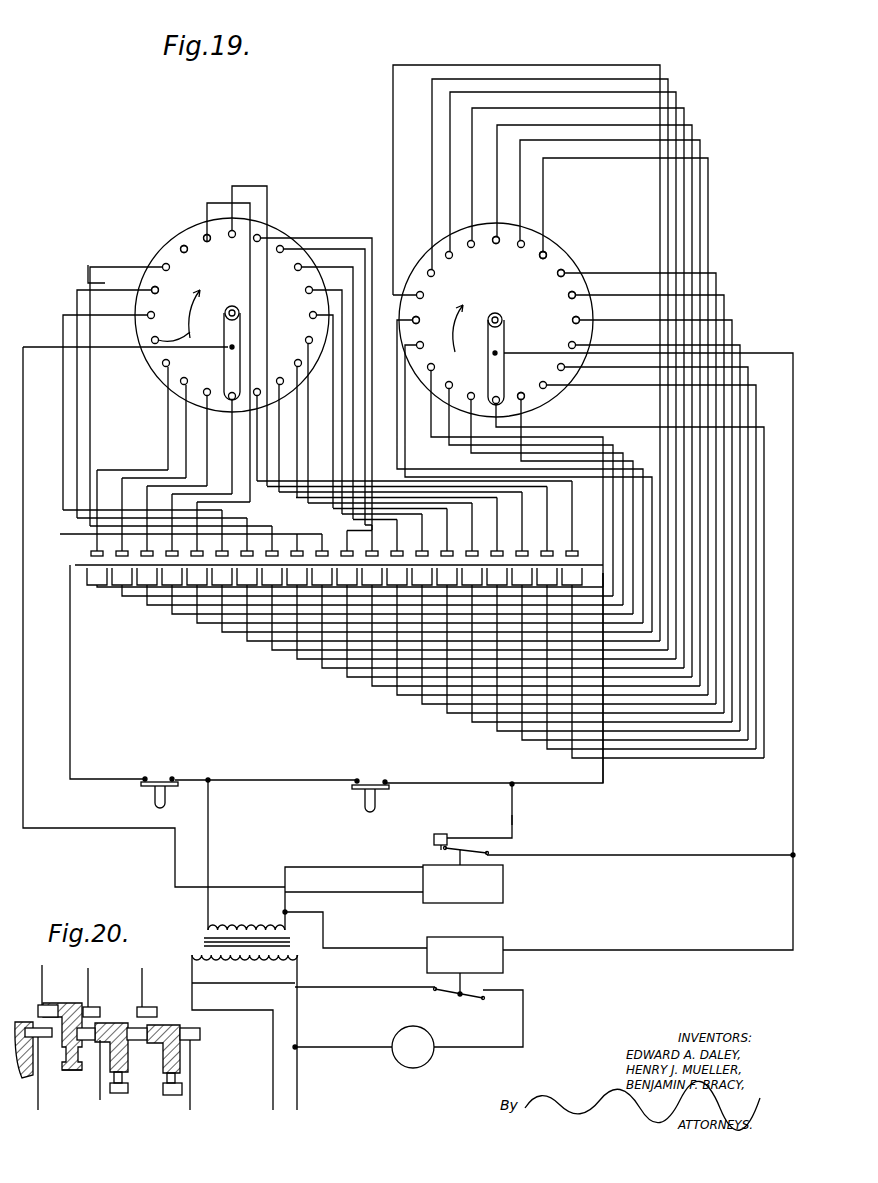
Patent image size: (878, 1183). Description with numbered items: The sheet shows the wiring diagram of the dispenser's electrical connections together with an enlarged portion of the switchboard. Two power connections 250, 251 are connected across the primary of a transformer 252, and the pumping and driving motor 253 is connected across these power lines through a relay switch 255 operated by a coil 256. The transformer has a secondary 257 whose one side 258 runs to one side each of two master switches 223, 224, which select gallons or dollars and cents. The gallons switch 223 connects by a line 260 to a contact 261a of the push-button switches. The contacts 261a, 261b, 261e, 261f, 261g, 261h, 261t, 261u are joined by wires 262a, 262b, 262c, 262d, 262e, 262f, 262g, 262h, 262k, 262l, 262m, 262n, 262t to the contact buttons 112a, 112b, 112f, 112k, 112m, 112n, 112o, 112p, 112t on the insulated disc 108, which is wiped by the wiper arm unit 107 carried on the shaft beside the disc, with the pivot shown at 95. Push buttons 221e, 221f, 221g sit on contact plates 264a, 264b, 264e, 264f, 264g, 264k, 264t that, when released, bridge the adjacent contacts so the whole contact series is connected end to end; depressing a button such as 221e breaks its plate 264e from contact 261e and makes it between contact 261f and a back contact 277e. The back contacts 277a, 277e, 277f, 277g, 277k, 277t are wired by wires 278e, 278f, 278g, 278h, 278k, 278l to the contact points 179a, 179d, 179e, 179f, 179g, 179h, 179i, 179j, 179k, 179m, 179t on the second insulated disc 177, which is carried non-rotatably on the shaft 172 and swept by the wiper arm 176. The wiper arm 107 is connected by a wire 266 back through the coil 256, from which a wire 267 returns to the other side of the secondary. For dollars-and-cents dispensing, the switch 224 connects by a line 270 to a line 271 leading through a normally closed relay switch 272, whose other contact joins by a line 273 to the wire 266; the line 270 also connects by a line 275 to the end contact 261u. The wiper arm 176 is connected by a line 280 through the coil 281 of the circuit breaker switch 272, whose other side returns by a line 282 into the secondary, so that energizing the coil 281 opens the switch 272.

In FIG. 19, the money dial shaft 95 is at (498, 312).
In FIG. 19, the wiper arm unit 107 is at (505, 330).
In FIG. 19, the insulated disc 108 is at (550, 245).
In FIG. 19, the zero contact button 112a is at (512, 382).
In FIG. 19, the contact button 112b is at (475, 392).
In FIG. 19, the contact button 112f is at (425, 318).
In FIG. 19, the contact button 112k is at (490, 250).
In FIG. 19, the contact button 112m is at (548, 258).
In FIG. 19, the contact button 112n is at (566, 273).
In FIG. 19, the contact button 112o is at (578, 293).
In FIG. 19, the contact button 112p is at (575, 320).
In FIG. 19, the contact button 112t is at (525, 398).
In FIG. 19, the shaft 172 is at (255, 300).
In FIG. 19, the wiper arm 176 is at (250, 325).
In FIG. 19, the insulated disc 177 is at (262, 235).
In FIG. 19, the zero contact button 179a is at (305, 343).
In FIG. 19, the contact point 179d is at (163, 363).
In FIG. 19, the contact point 179e is at (183, 317).
In FIG. 19, the contact point 179f is at (147, 317).
In FIG. 19, the contact point 179g is at (150, 272).
In FIG. 19, the contact point 179h is at (166, 263).
In FIG. 19, the contact point 179i is at (184, 245).
In FIG. 19, the contact point 179j is at (205, 230).
In FIG. 19, the contact point 179k is at (240, 230).
In FIG. 19, the contact point 179m is at (292, 248).
In FIG. 19, the contact point 179t is at (275, 380).
In FIG. 20, the push button 221e is at (66, 1070).
In FIG. 20, the push button 221f is at (128, 1090).
In FIG. 20, the push button 221g is at (182, 1093).
In FIG. 19, the master switch button 223 is at (166, 775).
In FIG. 19, the master switch button 224 is at (378, 778).
In FIG. 19, the power connection 250 is at (243, 1032).
In FIG. 19, the power connection 251 is at (297, 1085).
In FIG. 19, the transformer 252 is at (302, 930).
In FIG. 19, the pumping and driving motor 253 is at (408, 1068).
In FIG. 19, the relay switch 255 is at (485, 993).
In FIG. 19, the coil 256 is at (503, 968).
In FIG. 19, the secondary 257 is at (263, 928).
In FIG. 19, the side of the secondary 258 is at (210, 824).
In FIG. 19, the line 260 is at (70, 718).
In FIG. 19, the contact 261a is at (90, 565).
In FIG. 19, the contact 261b is at (88, 572).
In FIG. 20, the contact 261e is at (30, 1025).
In FIG. 20, the contact 261f is at (100, 1010).
In FIG. 20, the contact 261g is at (180, 1010).
In FIG. 20, the contact 261h is at (200, 1035).
In FIG. 19, the contact 261t is at (572, 560).
In FIG. 19, the contact 261u is at (585, 565).
In FIG. 19, the wire 262a is at (92, 588).
In FIG. 19, the wire 262b is at (118, 597).
In FIG. 19, the wire 262c is at (148, 610).
In FIG. 19, the wire 262d is at (172, 618).
In FIG. 19, the line 262e is at (197, 628).
In FIG. 20, the line 262e is at (38, 1085).
In FIG. 19, the wire 262f is at (222, 636).
In FIG. 19, the wire 262g is at (427, 62).
In FIG. 19, the wire 262h is at (462, 79).
In FIG. 20, the wire 262h is at (192, 1095).
In FIG. 19, the wire 262k is at (695, 135).
In FIG. 19, the wire 262l is at (710, 150).
In FIG. 19, the wire 262m is at (548, 188).
In FIG. 19, the wire 262n is at (432, 690).
In FIG. 19, the wire 262t is at (642, 427).
In FIG. 19, the contact plate 264a is at (88, 552).
In FIG. 19, the contact plate 264b is at (120, 580).
In FIG. 20, the switch plate 264e is at (60, 1040).
In FIG. 19, the contact plate 264f is at (245, 600).
In FIG. 20, the contact plate 264f is at (95, 1040).
In FIG. 20, the contact plate 264g is at (180, 1028).
In FIG. 19, the contact plate 264k is at (390, 600).
In FIG. 19, the contact plate 264t is at (590, 745).
In FIG. 19, the wire 266 is at (780, 358).
In FIG. 19, the wire 267 is at (383, 962).
In FIG. 19, the line 270 is at (455, 783).
In FIG. 19, the line 271 is at (512, 820).
In FIG. 19, the relay switch 272 is at (432, 838).
In FIG. 19, the line 273 is at (632, 855).
In FIG. 19, the line 275 is at (605, 780).
In FIG. 19, the back contact 277a is at (62, 534).
In FIG. 20, the back contact 277e is at (62, 1003).
In FIG. 20, the back contact 277f is at (92, 1023).
In FIG. 20, the back contact 277g is at (148, 1023).
In FIG. 19, the back contact 277k is at (345, 548).
In FIG. 19, the back contact 277t is at (560, 548).
In FIG. 20, the wire 278e is at (45, 980).
In FIG. 20, the wire 278f is at (90, 985).
In FIG. 19, the wire 278g is at (80, 280).
In FIG. 20, the wire 278g is at (145, 985).
In FIG. 19, the wire 278h is at (100, 265).
In FIG. 19, the wire 278k is at (246, 186).
In FIG. 19, the wire 278l is at (362, 235).
In FIG. 19, the line 280 is at (55, 347).
In FIG. 19, the coil 281 is at (503, 885).
In FIG. 19, the line 282 is at (318, 867).